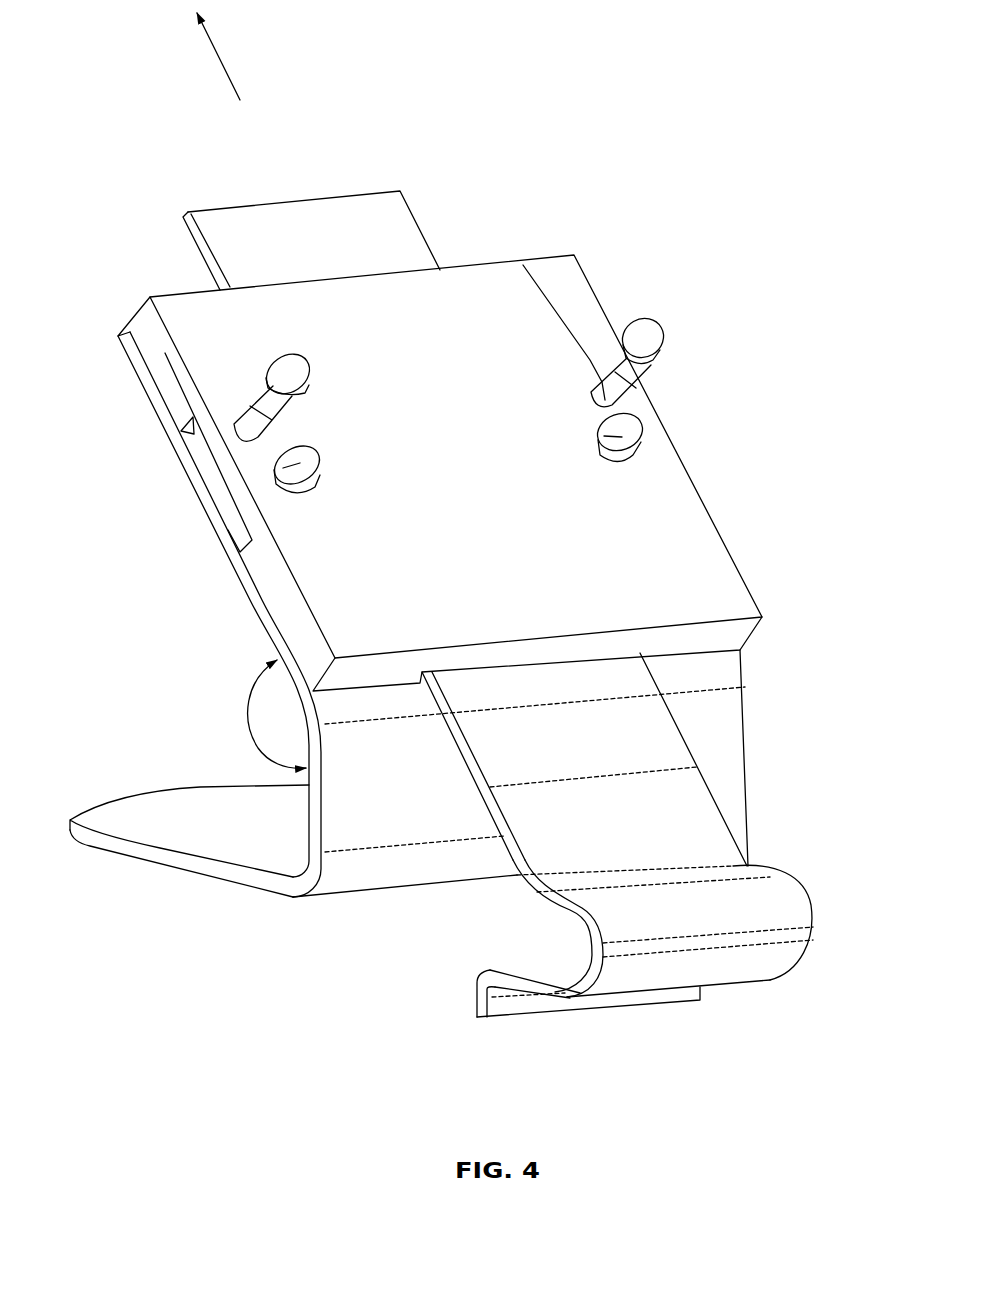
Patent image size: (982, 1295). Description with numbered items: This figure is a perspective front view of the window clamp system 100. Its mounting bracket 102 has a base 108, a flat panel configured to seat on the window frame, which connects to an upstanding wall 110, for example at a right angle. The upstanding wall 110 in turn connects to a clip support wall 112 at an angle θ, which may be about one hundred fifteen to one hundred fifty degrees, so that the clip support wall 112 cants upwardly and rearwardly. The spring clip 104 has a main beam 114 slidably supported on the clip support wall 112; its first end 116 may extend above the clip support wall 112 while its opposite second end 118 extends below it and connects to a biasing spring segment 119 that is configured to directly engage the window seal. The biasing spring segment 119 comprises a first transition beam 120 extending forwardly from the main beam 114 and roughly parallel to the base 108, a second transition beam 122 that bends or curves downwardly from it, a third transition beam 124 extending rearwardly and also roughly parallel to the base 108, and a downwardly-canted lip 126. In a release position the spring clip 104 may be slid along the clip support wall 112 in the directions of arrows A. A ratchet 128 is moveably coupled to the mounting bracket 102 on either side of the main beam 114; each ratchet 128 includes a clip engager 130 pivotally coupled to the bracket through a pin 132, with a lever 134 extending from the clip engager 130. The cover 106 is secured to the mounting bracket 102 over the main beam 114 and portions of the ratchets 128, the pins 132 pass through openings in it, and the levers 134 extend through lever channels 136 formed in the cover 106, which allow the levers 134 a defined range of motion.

The window clamp system 100 is at (126, 162).
The mounting bracket 102 is at (179, 806).
The spring clip 104 is at (385, 240).
The cover 106 is at (213, 323).
The base 108 is at (163, 866).
The upstanding wall 110 is at (350, 830).
The clip support wall 112 is at (237, 573).
The main beam 114 is at (313, 242).
The first end 116 is at (230, 217).
The second end 118 is at (657, 747).
The biasing spring segment 119 is at (703, 845).
The first transition beam 120 is at (757, 860).
The second transition beam 122 is at (783, 938).
The third transition beam 124 is at (567, 1003).
The downwardly-canted lip 126 is at (490, 1021).
The ratchet 128 is at (217, 492).
The clip engager 130 is at (213, 532).
The pin 132 is at (276, 487).
The lever 134 is at (248, 414).
The lever channel 136 is at (602, 380).